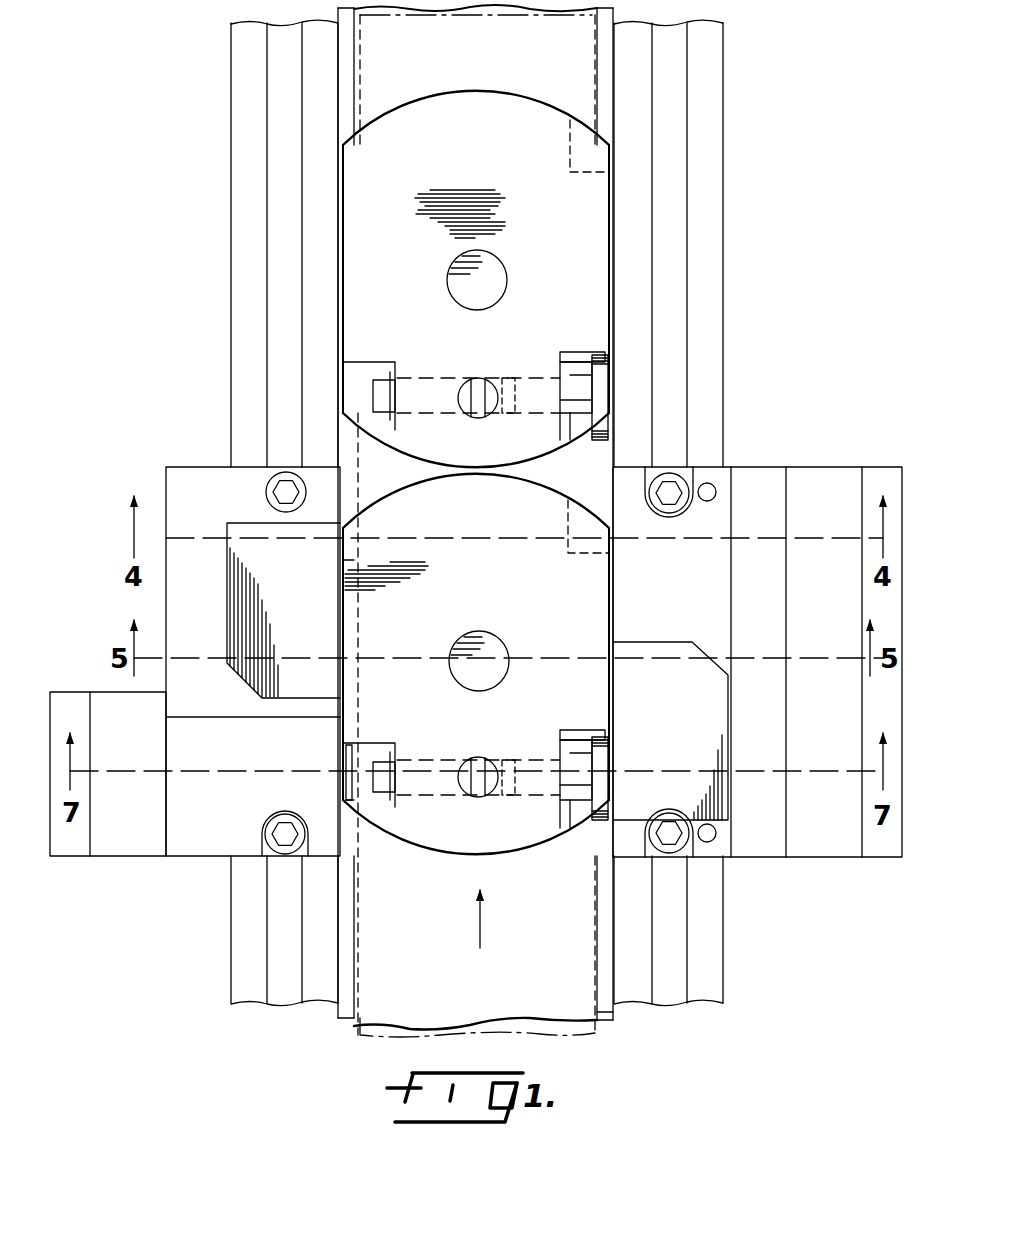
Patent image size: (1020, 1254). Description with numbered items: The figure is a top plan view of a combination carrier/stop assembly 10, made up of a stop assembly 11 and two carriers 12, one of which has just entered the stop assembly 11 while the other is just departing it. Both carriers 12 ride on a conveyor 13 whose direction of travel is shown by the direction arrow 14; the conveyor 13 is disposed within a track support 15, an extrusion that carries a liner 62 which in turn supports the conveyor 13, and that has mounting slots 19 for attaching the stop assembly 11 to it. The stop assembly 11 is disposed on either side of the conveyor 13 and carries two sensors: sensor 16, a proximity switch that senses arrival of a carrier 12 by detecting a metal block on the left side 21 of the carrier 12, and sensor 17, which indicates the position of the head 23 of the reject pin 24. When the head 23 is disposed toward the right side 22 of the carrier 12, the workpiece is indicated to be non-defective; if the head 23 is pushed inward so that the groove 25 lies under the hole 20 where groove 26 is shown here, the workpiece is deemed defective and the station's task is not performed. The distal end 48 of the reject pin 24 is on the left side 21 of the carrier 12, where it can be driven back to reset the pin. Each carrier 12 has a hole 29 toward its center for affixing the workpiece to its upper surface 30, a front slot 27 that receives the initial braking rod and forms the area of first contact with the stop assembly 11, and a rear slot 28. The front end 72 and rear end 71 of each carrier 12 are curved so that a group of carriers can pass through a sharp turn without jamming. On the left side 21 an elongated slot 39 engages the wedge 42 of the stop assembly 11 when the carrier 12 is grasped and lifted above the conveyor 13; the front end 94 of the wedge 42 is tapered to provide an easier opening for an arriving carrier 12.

The combination carrier/stop assembly 10 is at (752, 265).
The stop assembly 11 is at (182, 466).
The carrier 12 is at (427, 92).
The conveyor 13 is at (380, 1040).
The direction arrow 14 is at (482, 925).
The track support 15 is at (735, 979).
The sensor 16 is at (227, 585).
The sensor 17 is at (662, 648).
The mounting slots 19 is at (288, 1003).
The hole 20 is at (465, 410).
The left side 21 is at (342, 270).
The right side 22 is at (610, 268).
The head 23 is at (605, 380).
The reject pin 24 is at (580, 386).
The groove 25 is at (508, 420).
The groove 26 is at (479, 378).
The front slot 27 is at (578, 118).
The rear slot 28 is at (583, 428).
The hole 29 is at (500, 276).
The upper surface 30 is at (488, 176).
The elongated slot 39 is at (342, 570).
The wedge 42 is at (343, 727).
The distal end 48 is at (370, 380).
The liner 62 is at (598, 1032).
The rear end 71 is at (542, 452).
The front end 72 is at (486, 90).
The front end 94 is at (345, 805).